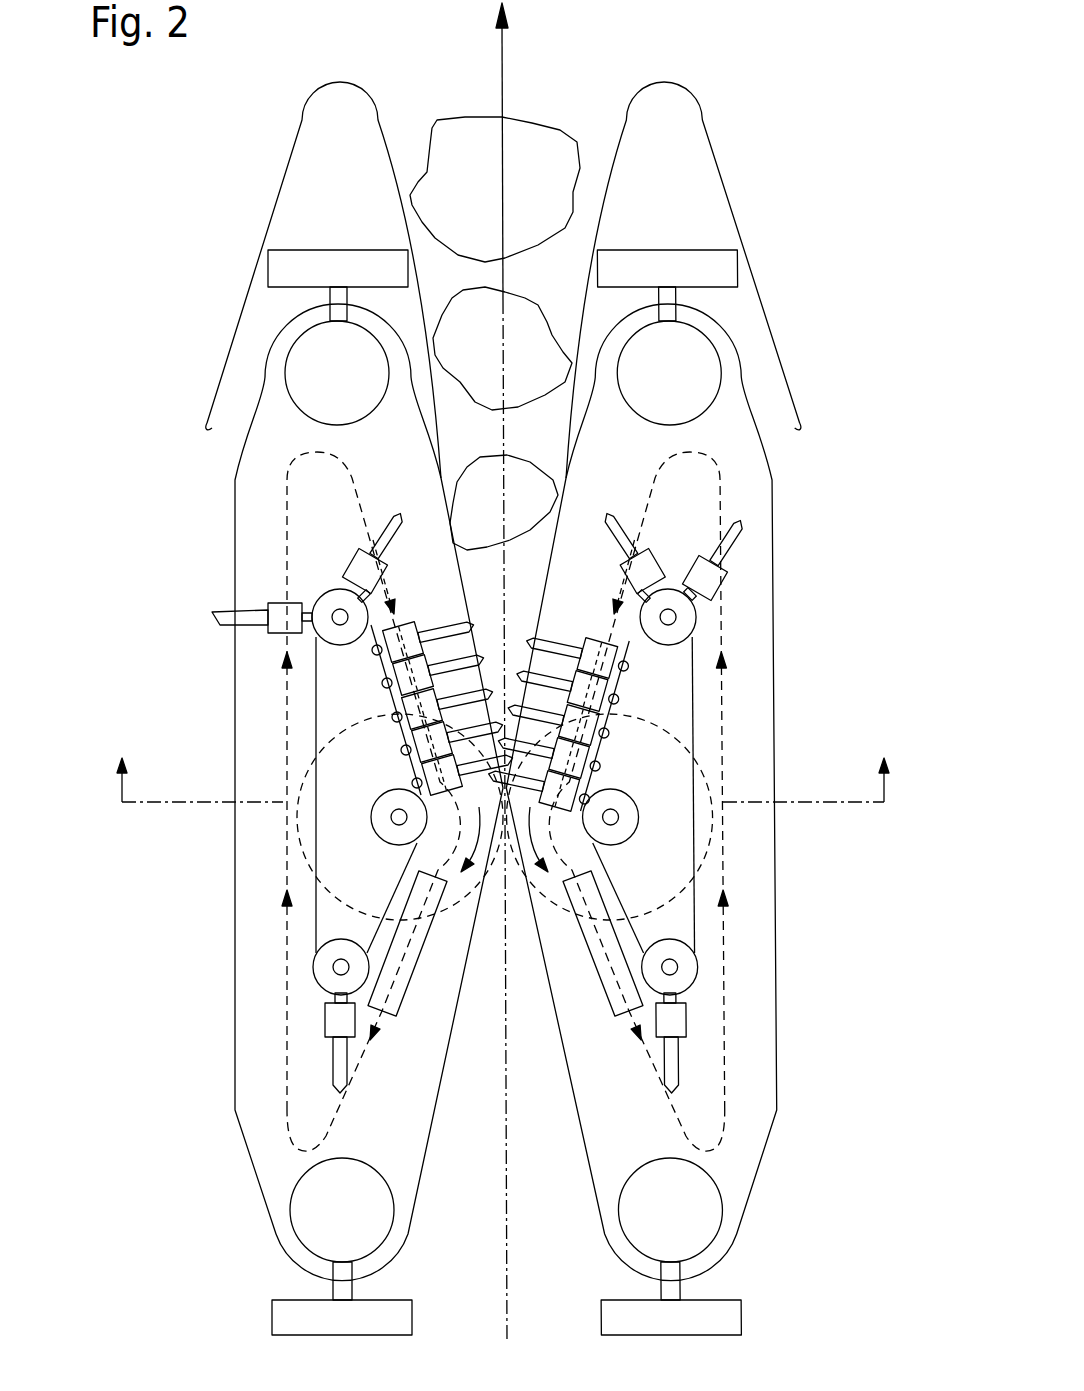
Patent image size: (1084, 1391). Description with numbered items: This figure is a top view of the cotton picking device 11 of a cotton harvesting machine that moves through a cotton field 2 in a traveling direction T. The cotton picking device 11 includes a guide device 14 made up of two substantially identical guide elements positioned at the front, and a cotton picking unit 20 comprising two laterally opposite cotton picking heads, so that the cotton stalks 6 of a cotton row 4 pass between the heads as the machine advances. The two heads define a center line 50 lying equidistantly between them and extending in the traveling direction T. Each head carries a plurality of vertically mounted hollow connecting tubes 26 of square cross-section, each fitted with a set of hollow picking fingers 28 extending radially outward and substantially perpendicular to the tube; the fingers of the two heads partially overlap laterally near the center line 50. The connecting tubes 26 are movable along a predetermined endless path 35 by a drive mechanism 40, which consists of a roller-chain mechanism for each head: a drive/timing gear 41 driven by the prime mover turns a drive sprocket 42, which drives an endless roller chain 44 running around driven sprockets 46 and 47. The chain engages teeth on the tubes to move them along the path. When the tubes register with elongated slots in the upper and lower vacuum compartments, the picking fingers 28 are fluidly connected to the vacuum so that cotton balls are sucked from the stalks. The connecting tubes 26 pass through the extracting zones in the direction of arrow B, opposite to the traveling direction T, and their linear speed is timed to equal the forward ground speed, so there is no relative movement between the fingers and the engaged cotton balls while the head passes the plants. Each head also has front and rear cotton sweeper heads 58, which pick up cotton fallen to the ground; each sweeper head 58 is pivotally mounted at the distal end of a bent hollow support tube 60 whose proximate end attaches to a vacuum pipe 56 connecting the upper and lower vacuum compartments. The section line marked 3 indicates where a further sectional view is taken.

The cotton field 2 is at (579, 90).
The cotton row 4 is at (502, 98).
The cotton stalks 6 is at (577, 141).
The cotton picking device 11 is at (880, 316).
The guide device 14 is at (241, 147).
The cotton picking unit 20 is at (257, 931).
The connecting tubes 26 is at (352, 564).
The picking fingers 28 is at (397, 530).
The predetermined endless path 35 is at (609, 910).
The drive mechanism 40 is at (748, 868).
The drive/timing gear 41 is at (292, 787).
The drive sprocket 42 is at (383, 802).
The endless roller chain 44 is at (694, 699).
The driven sprocket 46 is at (348, 645).
The driven sprocket 47 is at (312, 968).
The center line 50 is at (504, 1315).
The vacuum pipe 56 is at (321, 408).
The cotton sweeper head 58 is at (339, 250).
The support tube 60 is at (323, 295).
The traveling direction T is at (510, 43).
The direction of arrow B is at (381, 1036).
The section line 3 is at (502, 764).